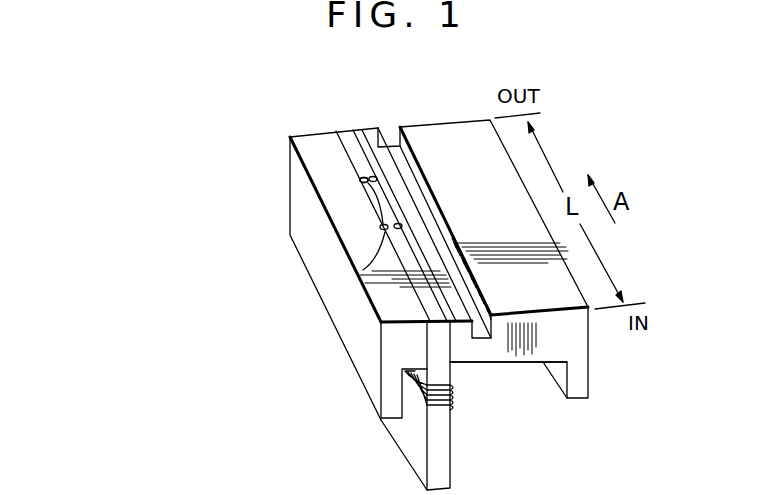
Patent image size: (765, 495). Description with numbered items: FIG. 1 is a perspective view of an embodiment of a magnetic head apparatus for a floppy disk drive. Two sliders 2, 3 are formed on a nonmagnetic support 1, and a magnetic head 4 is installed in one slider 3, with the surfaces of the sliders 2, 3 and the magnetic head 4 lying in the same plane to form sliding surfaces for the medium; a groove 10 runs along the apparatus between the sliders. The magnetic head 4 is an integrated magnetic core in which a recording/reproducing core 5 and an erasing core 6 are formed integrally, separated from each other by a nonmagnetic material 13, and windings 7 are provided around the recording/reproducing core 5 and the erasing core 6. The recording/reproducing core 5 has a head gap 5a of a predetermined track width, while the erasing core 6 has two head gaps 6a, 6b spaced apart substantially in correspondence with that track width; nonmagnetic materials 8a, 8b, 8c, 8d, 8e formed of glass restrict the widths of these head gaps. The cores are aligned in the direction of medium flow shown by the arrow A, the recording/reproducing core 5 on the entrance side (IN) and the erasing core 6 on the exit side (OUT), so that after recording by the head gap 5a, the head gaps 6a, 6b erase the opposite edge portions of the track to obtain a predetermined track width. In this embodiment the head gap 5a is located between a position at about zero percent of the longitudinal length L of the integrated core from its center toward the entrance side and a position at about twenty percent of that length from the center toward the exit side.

The support 1 is at (530, 362).
The slider 2 is at (468, 131).
The slider 3 is at (293, 134).
The magnetic head 4 is at (407, 454).
The recording/reproducing core 5 is at (372, 318).
The head gap 5a is at (390, 240).
The erasing core 6 is at (347, 135).
The head gap 6a is at (362, 178).
The head gap 6b is at (378, 177).
The winding 7 is at (457, 398).
The nonmagnetic material 8a is at (386, 234).
The nonmagnetic material 8b is at (402, 226).
The nonmagnetic material 8c is at (368, 176).
The nonmagnetic material 8d is at (360, 181).
The nonmagnetic material 8e is at (377, 181).
The groove 10 is at (478, 328).
The nonmagnetic material 13 is at (360, 200).